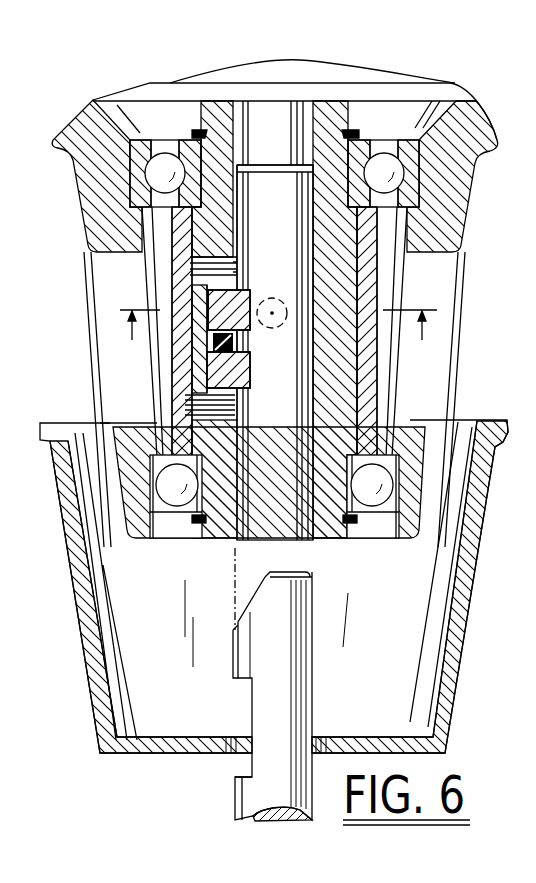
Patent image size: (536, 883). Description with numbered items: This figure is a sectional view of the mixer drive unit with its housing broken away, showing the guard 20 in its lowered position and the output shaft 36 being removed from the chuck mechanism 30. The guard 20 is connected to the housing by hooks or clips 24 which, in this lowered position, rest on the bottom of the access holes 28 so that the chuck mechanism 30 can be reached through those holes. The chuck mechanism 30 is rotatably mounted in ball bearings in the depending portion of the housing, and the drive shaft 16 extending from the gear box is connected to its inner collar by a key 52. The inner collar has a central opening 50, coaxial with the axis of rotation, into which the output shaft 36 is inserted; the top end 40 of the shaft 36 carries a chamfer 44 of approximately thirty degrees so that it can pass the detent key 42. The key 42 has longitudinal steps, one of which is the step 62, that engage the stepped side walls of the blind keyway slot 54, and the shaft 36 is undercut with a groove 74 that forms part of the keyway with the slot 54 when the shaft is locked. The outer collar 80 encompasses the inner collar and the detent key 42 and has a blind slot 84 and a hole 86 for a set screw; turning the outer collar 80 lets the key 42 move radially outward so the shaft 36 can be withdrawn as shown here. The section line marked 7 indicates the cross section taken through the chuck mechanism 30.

The shaft 16 is at (280, 104).
The shield or guard 20 is at (456, 641).
The hooks or clips 24 is at (275, 581).
The access holes 28 is at (112, 290).
The chuck mechanism 30 is at (378, 268).
The output shaft 36 is at (280, 687).
The top end 40 is at (284, 568).
The detent key 42 is at (208, 310).
The chamfer 44 is at (257, 590).
The central opening 50 is at (312, 450).
The key 52 is at (313, 126).
The blind slot 54 is at (237, 268).
The step 62 is at (207, 368).
The groove 74 is at (248, 283).
The outer collar 80 is at (373, 370).
The blind slot 84 is at (177, 275).
The hole 86 is at (265, 328).
The section line 7- 7 is at (278, 311).